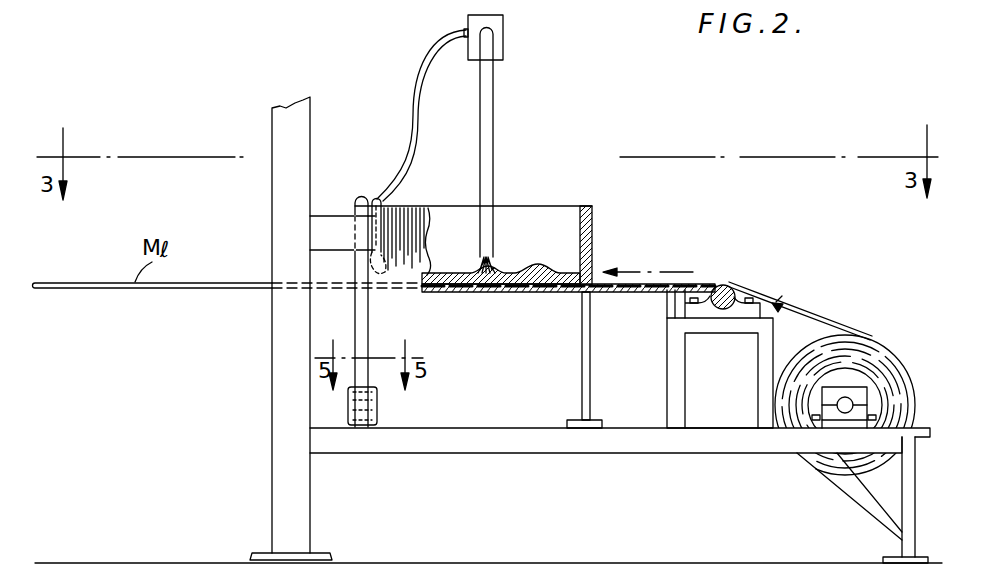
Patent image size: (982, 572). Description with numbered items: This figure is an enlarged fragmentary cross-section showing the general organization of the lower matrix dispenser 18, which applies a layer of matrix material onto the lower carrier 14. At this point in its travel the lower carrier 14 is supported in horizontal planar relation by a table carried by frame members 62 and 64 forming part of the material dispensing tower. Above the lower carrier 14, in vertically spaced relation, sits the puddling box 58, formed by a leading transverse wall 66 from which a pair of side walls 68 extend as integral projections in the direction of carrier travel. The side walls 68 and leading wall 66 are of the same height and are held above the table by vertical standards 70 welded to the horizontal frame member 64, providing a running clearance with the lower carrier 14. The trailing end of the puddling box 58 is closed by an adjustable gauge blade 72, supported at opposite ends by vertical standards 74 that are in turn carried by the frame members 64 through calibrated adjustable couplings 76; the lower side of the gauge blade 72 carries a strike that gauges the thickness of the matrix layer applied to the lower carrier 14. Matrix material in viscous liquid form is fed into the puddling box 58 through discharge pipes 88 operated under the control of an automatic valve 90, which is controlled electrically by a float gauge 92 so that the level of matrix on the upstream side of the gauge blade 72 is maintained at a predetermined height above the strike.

The lower carrier 14 is at (112, 296).
The lower matrix dispenser 18 is at (552, 203).
The puddling box 58 is at (560, 230).
The frame member 62 is at (285, 398).
The horizontal frame member 64 is at (502, 443).
The leading transverse wall 66 is at (594, 249).
The side wall 68 is at (507, 213).
The vertical standard 70 is at (596, 372).
The adjustable gauge blade 72 is at (356, 197).
The vertical standard 74 is at (368, 315).
The calibrated adjustable coupling 76 is at (378, 405).
The discharge pipe 88 is at (494, 112).
The automatic valve 90 is at (503, 24).
The float gauge 92 is at (388, 203).